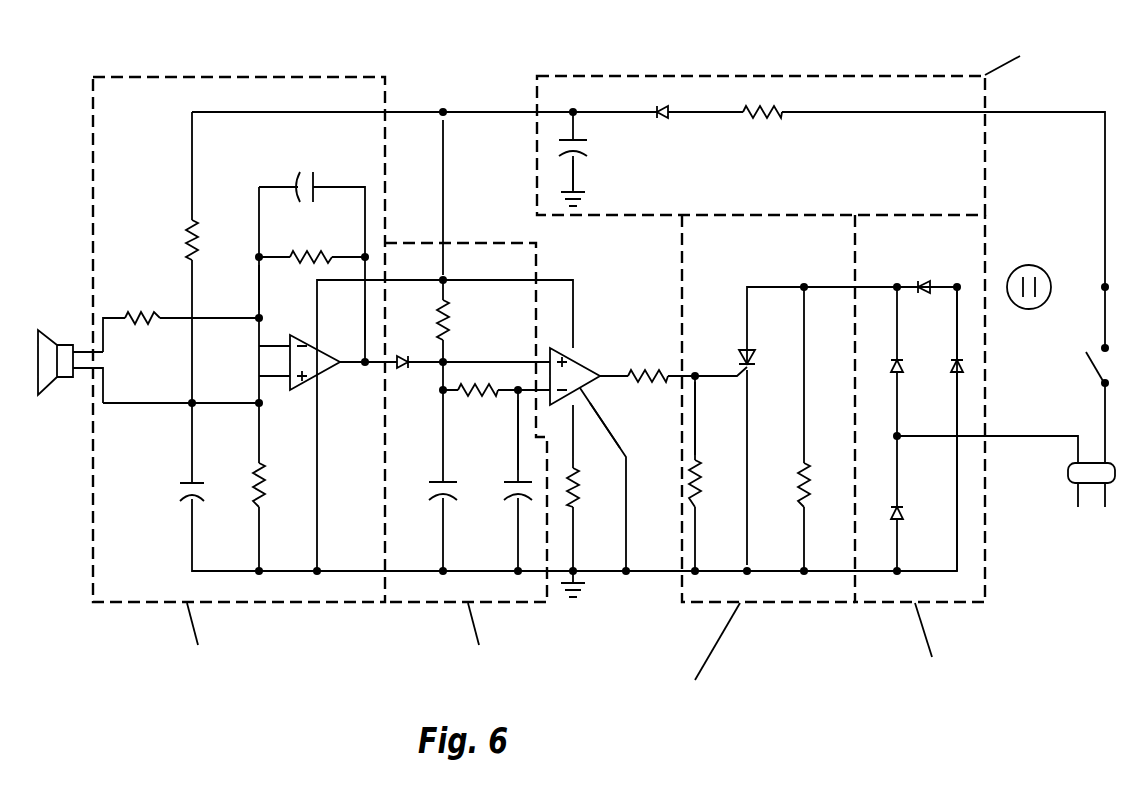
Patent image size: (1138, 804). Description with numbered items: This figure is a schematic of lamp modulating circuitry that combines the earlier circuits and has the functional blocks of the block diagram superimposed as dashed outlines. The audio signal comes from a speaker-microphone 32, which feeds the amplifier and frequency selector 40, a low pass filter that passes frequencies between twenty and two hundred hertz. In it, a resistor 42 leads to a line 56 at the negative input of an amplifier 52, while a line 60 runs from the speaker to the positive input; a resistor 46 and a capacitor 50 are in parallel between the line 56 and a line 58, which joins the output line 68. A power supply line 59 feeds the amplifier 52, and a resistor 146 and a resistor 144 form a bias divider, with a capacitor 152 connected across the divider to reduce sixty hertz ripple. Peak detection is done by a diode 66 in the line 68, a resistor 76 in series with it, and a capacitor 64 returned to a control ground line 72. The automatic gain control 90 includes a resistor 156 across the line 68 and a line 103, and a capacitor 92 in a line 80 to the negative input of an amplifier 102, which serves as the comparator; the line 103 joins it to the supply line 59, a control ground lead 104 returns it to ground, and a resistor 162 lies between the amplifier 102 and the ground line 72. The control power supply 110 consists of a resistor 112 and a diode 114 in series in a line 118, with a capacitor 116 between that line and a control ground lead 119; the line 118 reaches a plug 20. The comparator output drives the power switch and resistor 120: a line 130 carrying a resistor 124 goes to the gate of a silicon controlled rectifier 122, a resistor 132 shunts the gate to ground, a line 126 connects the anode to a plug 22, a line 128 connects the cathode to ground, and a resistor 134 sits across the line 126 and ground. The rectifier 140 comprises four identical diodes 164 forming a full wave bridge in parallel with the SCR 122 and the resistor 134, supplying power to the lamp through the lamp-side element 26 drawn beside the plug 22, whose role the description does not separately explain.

The plug 20 is at (1066, 479).
The plug 22 is at (1027, 266).
The relay switch contacts 26 is at (1090, 366).
The speaker-microphone 32 is at (49, 325).
The amplifier and frequency selector 40 is at (257, 603).
The resistor 42 is at (138, 310).
The resistor 46 is at (307, 251).
The capacitor 50 is at (305, 171).
The amplifier 52 is at (324, 367).
The line 56 is at (256, 282).
The line 58 is at (364, 314).
The power supply line 59 is at (450, 161).
The line 60 is at (139, 403).
The capacitor 64 is at (423, 480).
The diode 66 is at (403, 354).
The line 68 is at (412, 368).
The control ground line 72 is at (644, 575).
The resistor 76 is at (472, 395).
The line 80 is at (516, 438).
The automatic gain control 90 is at (415, 603).
The capacitor 92 is at (498, 482).
The amplifier 102 is at (604, 382).
The line 103 is at (485, 280).
The control ground lead 104 is at (608, 446).
The control power supply 110 is at (835, 76).
The resistor 112 is at (759, 119).
The diode 114 is at (667, 119).
The capacitor 116 is at (578, 147).
The line 118 is at (420, 108).
The control ground lead 119 is at (579, 174).
The power switch and resistor 120 is at (757, 603).
The silicon controlled rectifier 122 is at (752, 348).
The resistor 124 is at (635, 370).
The line 126 is at (828, 282).
The line 128 is at (747, 437).
The line 130 is at (696, 361).
The resistor 132 is at (697, 500).
The resistor 134 is at (796, 498).
The rectifier 140 is at (958, 603).
The resistor 144 is at (252, 498).
The resistor 146 is at (184, 238).
The capacitor 152 is at (170, 489).
The resistor 156 is at (452, 311).
The resistor 162 is at (578, 500).
The diodes 164 is at (916, 278).